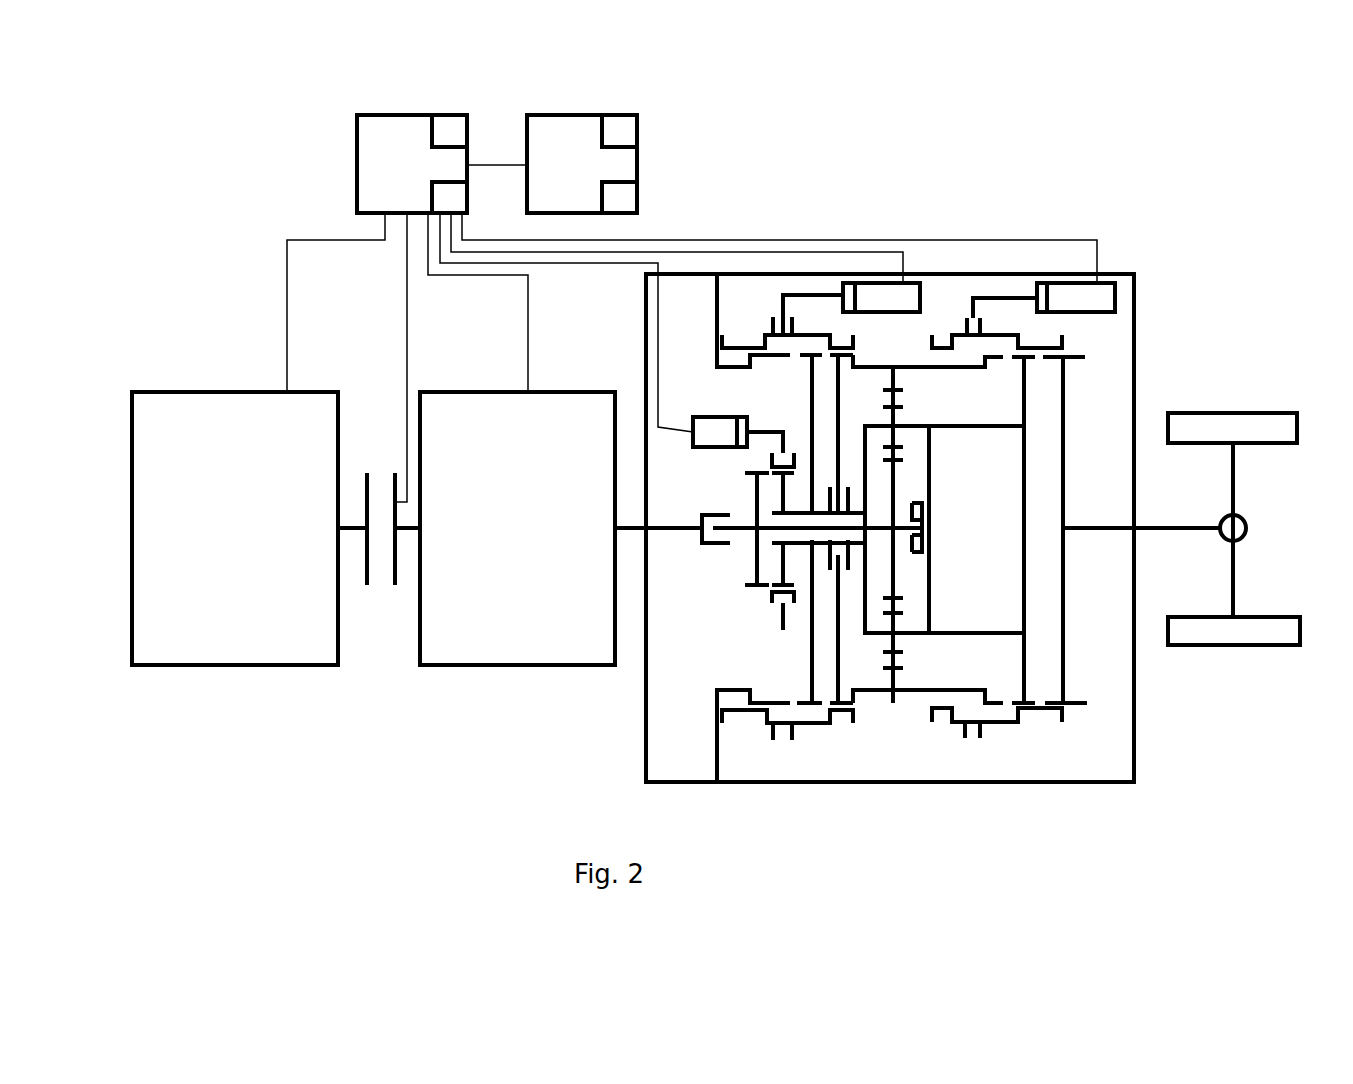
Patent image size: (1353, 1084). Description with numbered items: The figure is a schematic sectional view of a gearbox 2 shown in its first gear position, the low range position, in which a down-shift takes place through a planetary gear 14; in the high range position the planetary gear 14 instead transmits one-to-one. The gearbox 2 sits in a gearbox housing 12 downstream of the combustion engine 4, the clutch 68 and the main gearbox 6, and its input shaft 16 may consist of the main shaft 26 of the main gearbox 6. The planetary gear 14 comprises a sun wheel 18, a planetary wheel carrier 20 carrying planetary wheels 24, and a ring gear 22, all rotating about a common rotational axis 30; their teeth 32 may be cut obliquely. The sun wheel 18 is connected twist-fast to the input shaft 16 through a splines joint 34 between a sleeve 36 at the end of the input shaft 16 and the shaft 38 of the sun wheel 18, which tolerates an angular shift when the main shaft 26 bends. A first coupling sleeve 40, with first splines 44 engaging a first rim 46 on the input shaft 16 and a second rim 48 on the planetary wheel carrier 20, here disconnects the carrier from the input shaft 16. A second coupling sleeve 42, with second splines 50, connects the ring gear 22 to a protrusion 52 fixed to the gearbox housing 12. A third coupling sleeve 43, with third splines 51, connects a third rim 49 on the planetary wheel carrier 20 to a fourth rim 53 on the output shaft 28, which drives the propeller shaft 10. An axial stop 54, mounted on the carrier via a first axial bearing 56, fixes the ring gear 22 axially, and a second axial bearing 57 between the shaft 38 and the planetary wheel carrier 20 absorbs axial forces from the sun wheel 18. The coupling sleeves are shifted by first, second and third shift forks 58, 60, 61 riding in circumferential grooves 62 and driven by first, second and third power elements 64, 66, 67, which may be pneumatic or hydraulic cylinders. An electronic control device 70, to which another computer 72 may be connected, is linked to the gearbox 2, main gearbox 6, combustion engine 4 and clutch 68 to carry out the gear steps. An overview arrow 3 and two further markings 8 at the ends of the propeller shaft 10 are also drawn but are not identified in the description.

The gearbox 2 is at (920, 212).
The hybrid drive train 3 is at (205, 320).
The combustion engine 4 is at (222, 668).
The main gearbox 6 is at (515, 668).
The drive wheels 8 is at (1218, 413).
The propeller shaft 10 is at (1148, 526).
The gearbox housing 12 is at (1025, 272).
The planetary gear 14 is at (960, 567).
The input shaft 16 is at (672, 530).
The sun wheel 18 is at (917, 560).
The planetary wheel carrier 20 is at (1063, 458).
The ring gear 22 is at (900, 372).
The planetary wheels 24 is at (900, 410).
The main shaft 26 is at (628, 523).
The output shaft 28 is at (1133, 550).
The rotational axis 30 is at (870, 526).
The teeth 32 is at (930, 630).
The splines joint 34 is at (702, 518).
The sleeve 36 is at (673, 533).
The shaft of the sun wheel 38 is at (745, 530).
The first axially shiftable coupling sleeve 40 is at (772, 460).
The second axially shiftable coupling sleeve 42 is at (812, 345).
The third axially shiftable coupling sleeve 43 is at (1062, 343).
The first splines 44 is at (757, 476).
The first rim 46 is at (752, 572).
The second rim 48 is at (790, 608).
The third rim 49 is at (1063, 380).
The second splines 50 is at (853, 712).
The third splines 51 is at (1037, 708).
The protrusion 52 is at (717, 343).
The fourth rim 53 is at (1063, 420).
The axial stop 54 is at (838, 407).
The first axial bearing 56 is at (806, 620).
The second axial bearing 57 is at (928, 500).
The first shift fork 58 is at (778, 432).
The second shift fork 60 is at (783, 308).
The third shift fork 61 is at (973, 290).
The circumferential grooves 62 is at (772, 600).
The first power element 64 is at (720, 417).
The second power element 66 is at (923, 290).
The third power element 67 is at (1117, 296).
The clutch 68 is at (372, 590).
The electronic control device 70 is at (355, 148).
The computer 72 is at (638, 163).